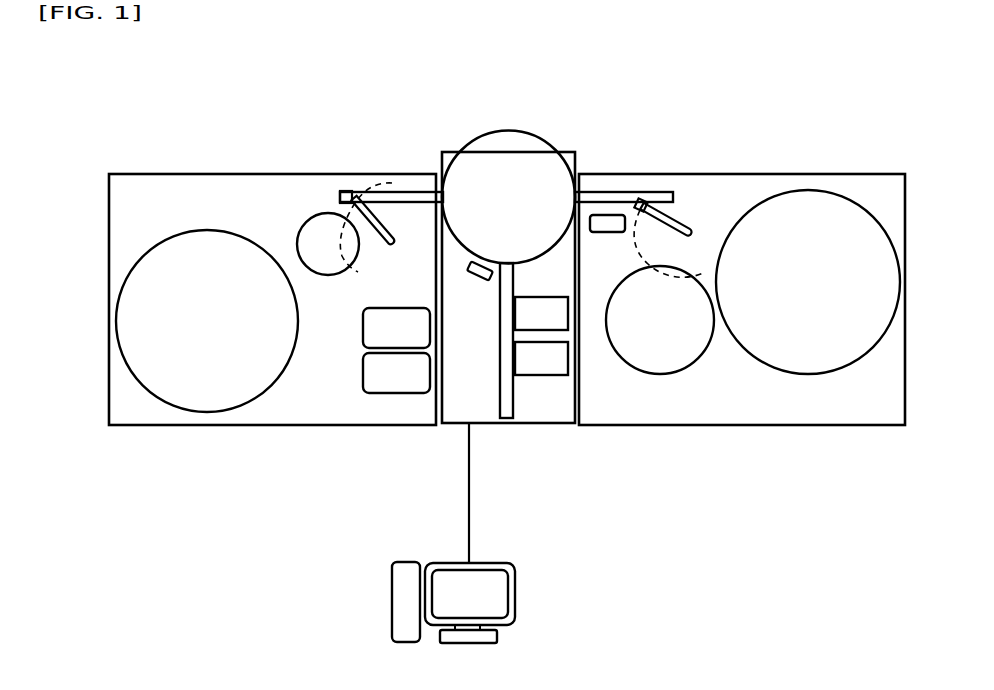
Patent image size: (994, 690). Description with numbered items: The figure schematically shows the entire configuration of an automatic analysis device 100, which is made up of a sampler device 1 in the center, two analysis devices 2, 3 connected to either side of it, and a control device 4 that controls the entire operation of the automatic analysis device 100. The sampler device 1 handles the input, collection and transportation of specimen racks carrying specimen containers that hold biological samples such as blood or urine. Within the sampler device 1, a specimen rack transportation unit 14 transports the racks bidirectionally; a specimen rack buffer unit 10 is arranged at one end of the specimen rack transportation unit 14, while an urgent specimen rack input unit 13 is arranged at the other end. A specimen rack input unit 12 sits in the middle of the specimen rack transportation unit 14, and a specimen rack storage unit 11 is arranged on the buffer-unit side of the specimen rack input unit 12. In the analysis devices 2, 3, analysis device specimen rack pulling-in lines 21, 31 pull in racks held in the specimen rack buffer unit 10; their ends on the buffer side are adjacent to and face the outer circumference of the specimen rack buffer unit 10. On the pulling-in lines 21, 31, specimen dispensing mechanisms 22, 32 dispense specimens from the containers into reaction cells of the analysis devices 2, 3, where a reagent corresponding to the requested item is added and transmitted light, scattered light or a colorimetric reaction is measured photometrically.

The automatic analysis device 100 is at (767, 550).
The sampler device 1 is at (559, 134).
The analysis device 2 is at (878, 184).
The analysis device 3 is at (166, 186).
The control device 4 is at (525, 597).
The specimen rack buffer unit 10 is at (504, 131).
The specimen rack storage unit 11 is at (583, 330).
The specimen rack input unit 12 is at (553, 369).
The urgent specimen rack input unit 13 is at (496, 413).
The specimen rack transportation unit 14 is at (515, 378).
The analysis device specimen rack pulling-in line 21 is at (602, 190).
The specimen dispensing mechanism 22 is at (680, 218).
The analysis device specimen rack pulling-in line 31 is at (413, 190).
The specimen dispensing mechanism 32 is at (346, 190).